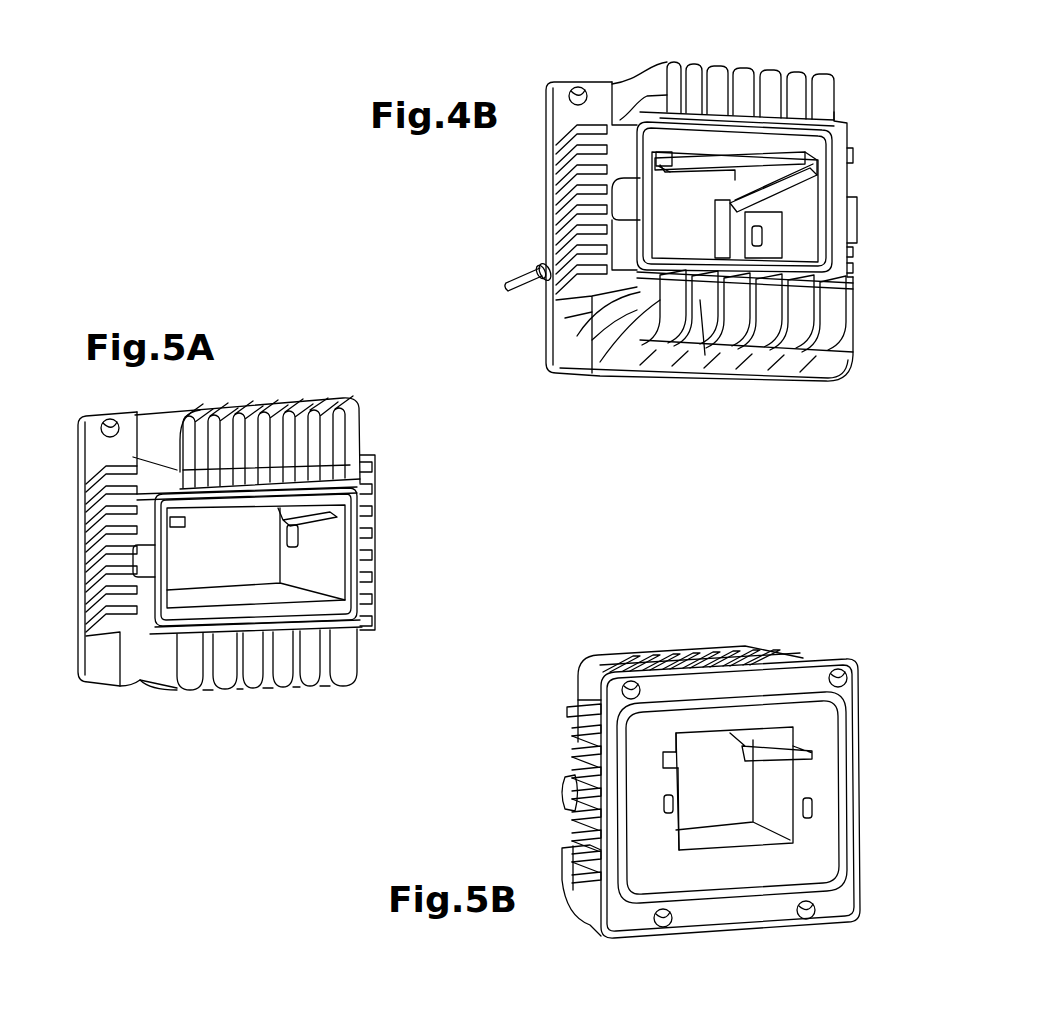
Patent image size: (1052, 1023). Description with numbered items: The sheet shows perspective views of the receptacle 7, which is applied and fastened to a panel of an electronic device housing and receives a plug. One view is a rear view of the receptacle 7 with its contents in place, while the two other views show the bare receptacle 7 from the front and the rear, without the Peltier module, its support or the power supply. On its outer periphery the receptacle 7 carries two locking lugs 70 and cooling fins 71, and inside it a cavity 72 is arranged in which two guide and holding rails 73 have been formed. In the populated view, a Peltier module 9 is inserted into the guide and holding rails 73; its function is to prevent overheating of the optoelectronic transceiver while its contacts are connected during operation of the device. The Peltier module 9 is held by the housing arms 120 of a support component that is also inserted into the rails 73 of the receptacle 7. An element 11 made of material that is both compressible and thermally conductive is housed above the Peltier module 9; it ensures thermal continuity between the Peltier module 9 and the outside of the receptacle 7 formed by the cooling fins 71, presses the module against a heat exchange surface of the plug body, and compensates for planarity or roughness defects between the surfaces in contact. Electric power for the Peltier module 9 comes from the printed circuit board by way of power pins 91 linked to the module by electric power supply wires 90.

In FIG. 4B, the receptacle 7 is at (793, 332).
In FIG. 5A, the receptacle 7 is at (350, 420).
In FIG. 5B, the receptacle 7 is at (617, 700).
In FIG. 4B, the Peltier module 9 is at (790, 210).
In FIG. 4B, the element made of compressible and thermally conductive material 11 is at (630, 300).
In FIG. 4B, the locking lug 70 is at (857, 225).
In FIG. 5B, the locking lug 70 is at (563, 782).
In FIG. 4B, the cooling fins 71 is at (640, 94).
In FIG. 5A, the cooling fins 71 is at (250, 437).
In FIG. 5B, the cooling fins 71 is at (727, 650).
In FIG. 4B, the cavity 72 is at (700, 235).
In FIG. 5A, the cavity 72 is at (259, 568).
In FIG. 5B, the cavity 72 is at (735, 795).
In FIG. 4B, the guide and holding rail 73 is at (748, 168).
In FIG. 5A, the guide and holding rail 73 is at (313, 518).
In FIG. 5B, the guide and holding rail 73 is at (668, 757).
In FIG. 4B, the electric power supply wires 90 is at (342, 7).
In FIG. 4B, the power pin 91 is at (510, 282).
In FIG. 4B, the housing arm 120 is at (543, 272).